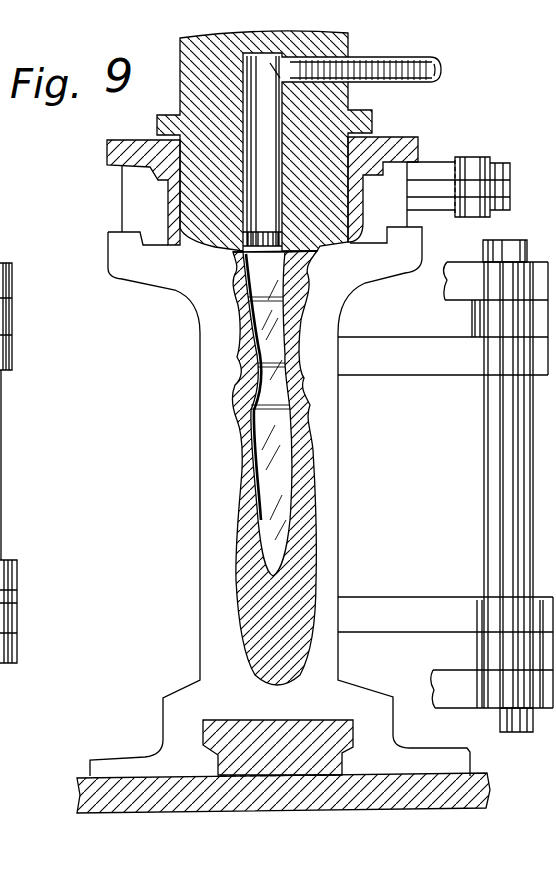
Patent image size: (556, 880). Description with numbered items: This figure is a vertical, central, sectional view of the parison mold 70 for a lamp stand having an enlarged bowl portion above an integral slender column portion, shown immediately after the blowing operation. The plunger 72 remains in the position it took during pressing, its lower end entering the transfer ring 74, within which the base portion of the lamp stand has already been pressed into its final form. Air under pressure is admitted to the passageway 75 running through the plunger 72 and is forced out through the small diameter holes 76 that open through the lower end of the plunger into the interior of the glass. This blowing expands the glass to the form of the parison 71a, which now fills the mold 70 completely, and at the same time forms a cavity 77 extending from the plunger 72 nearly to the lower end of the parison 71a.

The mold 70 is at (205, 402).
The expanded parison 71a is at (300, 578).
The plunger 72 is at (322, 105).
The transfer ring 74 is at (390, 185).
The passageway 75 is at (265, 98).
The small diameter holes 76 is at (232, 287).
The cavity 77 is at (273, 472).